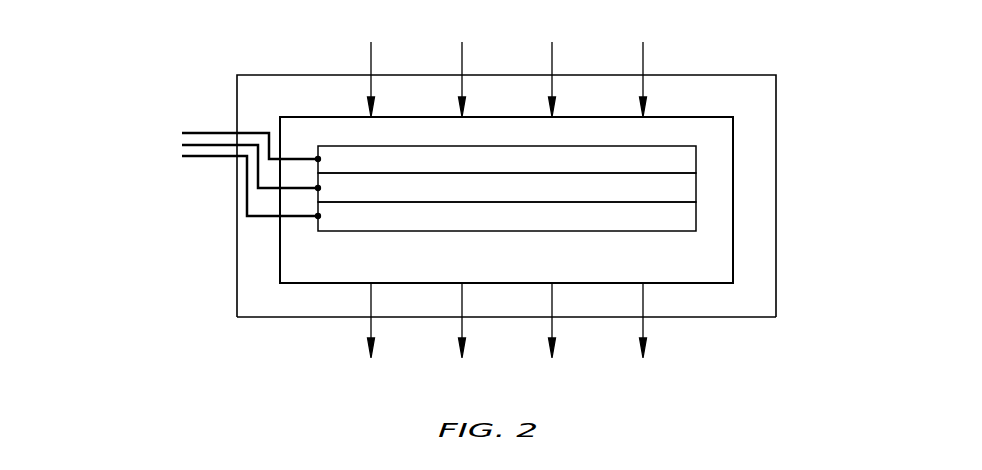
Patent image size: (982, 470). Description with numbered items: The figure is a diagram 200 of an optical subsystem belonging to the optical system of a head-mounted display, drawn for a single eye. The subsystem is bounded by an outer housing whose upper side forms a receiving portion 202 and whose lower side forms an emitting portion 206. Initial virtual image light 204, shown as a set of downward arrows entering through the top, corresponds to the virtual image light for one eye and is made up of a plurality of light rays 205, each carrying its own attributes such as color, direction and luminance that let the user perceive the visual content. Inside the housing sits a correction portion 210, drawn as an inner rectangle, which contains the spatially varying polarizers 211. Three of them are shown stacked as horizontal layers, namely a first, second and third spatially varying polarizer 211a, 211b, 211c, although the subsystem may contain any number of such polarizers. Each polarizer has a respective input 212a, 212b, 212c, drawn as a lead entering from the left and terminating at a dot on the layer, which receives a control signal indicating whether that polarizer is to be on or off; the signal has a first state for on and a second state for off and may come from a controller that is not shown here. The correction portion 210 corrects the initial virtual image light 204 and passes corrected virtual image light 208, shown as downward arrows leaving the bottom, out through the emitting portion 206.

The diagram 200 is at (148, 65).
The receiving portion 202 is at (757, 75).
The initial virtual image light 204 is at (561, 36).
The light rays 205 is at (645, 63).
The emitting portion 206 is at (741, 317).
The corrected virtual image light 208 is at (645, 321).
The correction portion 210 is at (733, 135).
The spatially varying polarizers 211 is at (617, 206).
The first spatially varying polarizer 211a is at (696, 160).
The second spatially varying polarizer 211b is at (696, 188).
The third spatially varying polarizer 211c is at (696, 216).
The input 212a is at (318, 159).
The input 212b is at (318, 188).
The input 212c is at (318, 216).